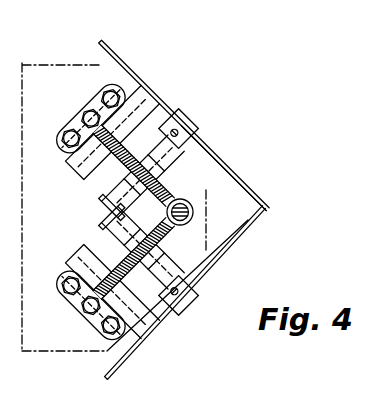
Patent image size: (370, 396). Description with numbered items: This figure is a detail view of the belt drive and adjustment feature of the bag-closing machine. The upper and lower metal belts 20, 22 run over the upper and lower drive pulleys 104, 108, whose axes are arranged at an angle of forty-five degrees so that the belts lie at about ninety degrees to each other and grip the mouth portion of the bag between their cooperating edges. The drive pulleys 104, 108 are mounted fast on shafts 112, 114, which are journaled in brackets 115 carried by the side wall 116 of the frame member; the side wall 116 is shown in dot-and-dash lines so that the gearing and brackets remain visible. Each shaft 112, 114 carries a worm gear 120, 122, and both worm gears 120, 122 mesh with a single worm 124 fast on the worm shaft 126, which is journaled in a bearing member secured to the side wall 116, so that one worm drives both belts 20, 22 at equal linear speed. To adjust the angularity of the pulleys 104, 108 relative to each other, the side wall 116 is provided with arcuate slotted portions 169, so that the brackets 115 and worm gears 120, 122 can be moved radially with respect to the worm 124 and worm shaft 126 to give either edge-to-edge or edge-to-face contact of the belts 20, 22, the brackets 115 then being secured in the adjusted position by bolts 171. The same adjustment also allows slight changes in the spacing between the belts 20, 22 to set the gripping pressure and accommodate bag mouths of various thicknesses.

The upper metal belt 20 is at (236, 175).
The lower metal belt 22 is at (248, 234).
The upper drive pulley 104 is at (118, 57).
The lower drive pulley 108 is at (143, 346).
The shaft 112 is at (185, 120).
The shaft 114 is at (190, 302).
The bracket 115 is at (100, 100).
The side wall 116 is at (68, 63).
The worm gear 120 is at (110, 167).
The worm gear 122 is at (110, 278).
The worm 124 is at (183, 200).
The worm shaft 126 is at (193, 209).
The arcuate slotted portion 169 is at (81, 116).
The bolt 171 is at (72, 143).